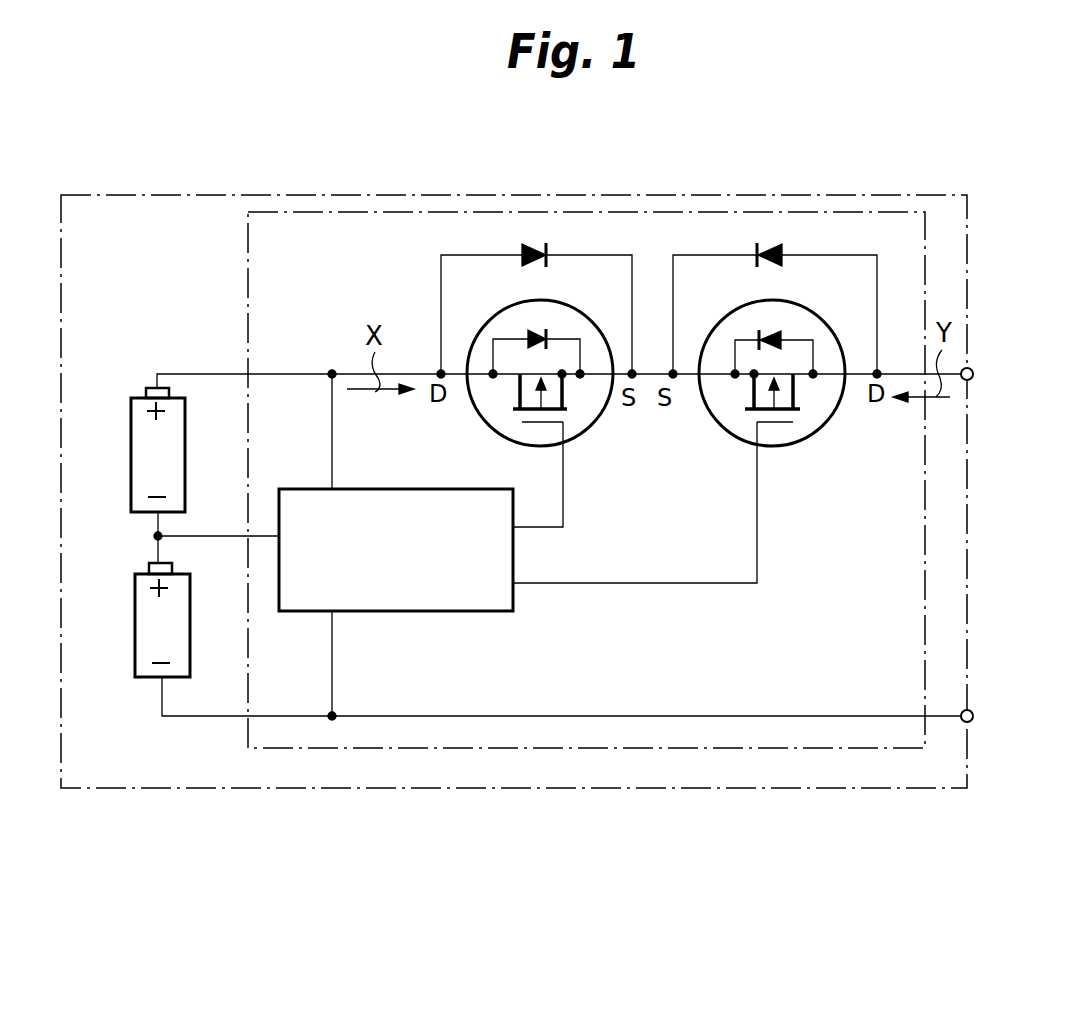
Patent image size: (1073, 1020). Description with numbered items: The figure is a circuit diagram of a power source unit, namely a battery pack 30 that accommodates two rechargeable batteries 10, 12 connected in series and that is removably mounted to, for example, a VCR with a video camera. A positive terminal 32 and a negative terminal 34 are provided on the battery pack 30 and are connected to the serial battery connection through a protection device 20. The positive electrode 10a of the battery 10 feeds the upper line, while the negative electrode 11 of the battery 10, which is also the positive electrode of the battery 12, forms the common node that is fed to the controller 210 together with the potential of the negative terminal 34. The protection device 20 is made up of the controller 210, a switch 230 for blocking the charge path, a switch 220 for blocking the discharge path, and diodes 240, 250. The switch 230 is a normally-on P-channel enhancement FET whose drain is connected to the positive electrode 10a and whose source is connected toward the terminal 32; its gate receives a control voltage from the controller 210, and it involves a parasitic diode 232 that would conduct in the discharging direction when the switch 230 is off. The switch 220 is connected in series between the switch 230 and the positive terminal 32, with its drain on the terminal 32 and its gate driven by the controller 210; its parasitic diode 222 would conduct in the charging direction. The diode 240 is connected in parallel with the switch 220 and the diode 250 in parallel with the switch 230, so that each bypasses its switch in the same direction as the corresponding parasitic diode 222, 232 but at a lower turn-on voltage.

The rechargeable battery 10 is at (131, 446).
The positive electrode 10a is at (195, 374).
The negative electrode 11 is at (213, 536).
The rechargeable battery 12 is at (135, 625).
The protection device 20 is at (927, 470).
The battery pack 30 is at (803, 194).
The positive terminal 32 is at (974, 373).
The negative terminal 34 is at (974, 715).
The controller 210 is at (417, 611).
The switch for blocking discharge path 220 is at (725, 427).
The parasitic diode 222 is at (770, 334).
The switch for blocking charge path 230 is at (495, 428).
The parasitic diode 232 is at (536, 332).
The diode 240 is at (762, 252).
The diode 250 is at (524, 252).